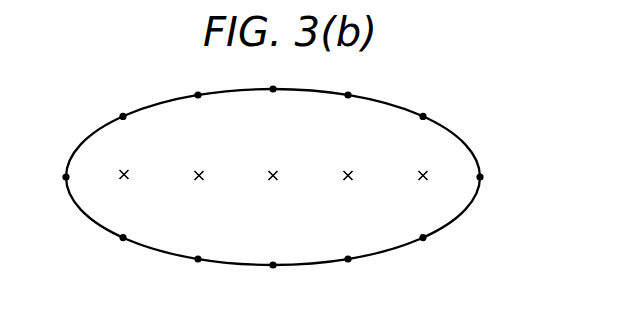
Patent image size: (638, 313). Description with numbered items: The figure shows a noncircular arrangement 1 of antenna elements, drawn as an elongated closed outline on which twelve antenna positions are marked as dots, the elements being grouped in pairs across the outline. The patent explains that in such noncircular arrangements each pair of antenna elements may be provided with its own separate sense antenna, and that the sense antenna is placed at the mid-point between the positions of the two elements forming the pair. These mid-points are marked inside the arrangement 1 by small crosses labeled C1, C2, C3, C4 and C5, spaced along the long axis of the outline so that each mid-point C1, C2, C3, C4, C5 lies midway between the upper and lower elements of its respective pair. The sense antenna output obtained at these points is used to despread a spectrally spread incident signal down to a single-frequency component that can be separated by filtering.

The noncircular arrangement 1 is at (453, 132).
The mid-point C1 is at (125, 194).
The mid-point C2 is at (200, 195).
The mid-point C3 is at (275, 195).
The mid-point C4 is at (350, 195).
The mid-point C5 is at (425, 195).